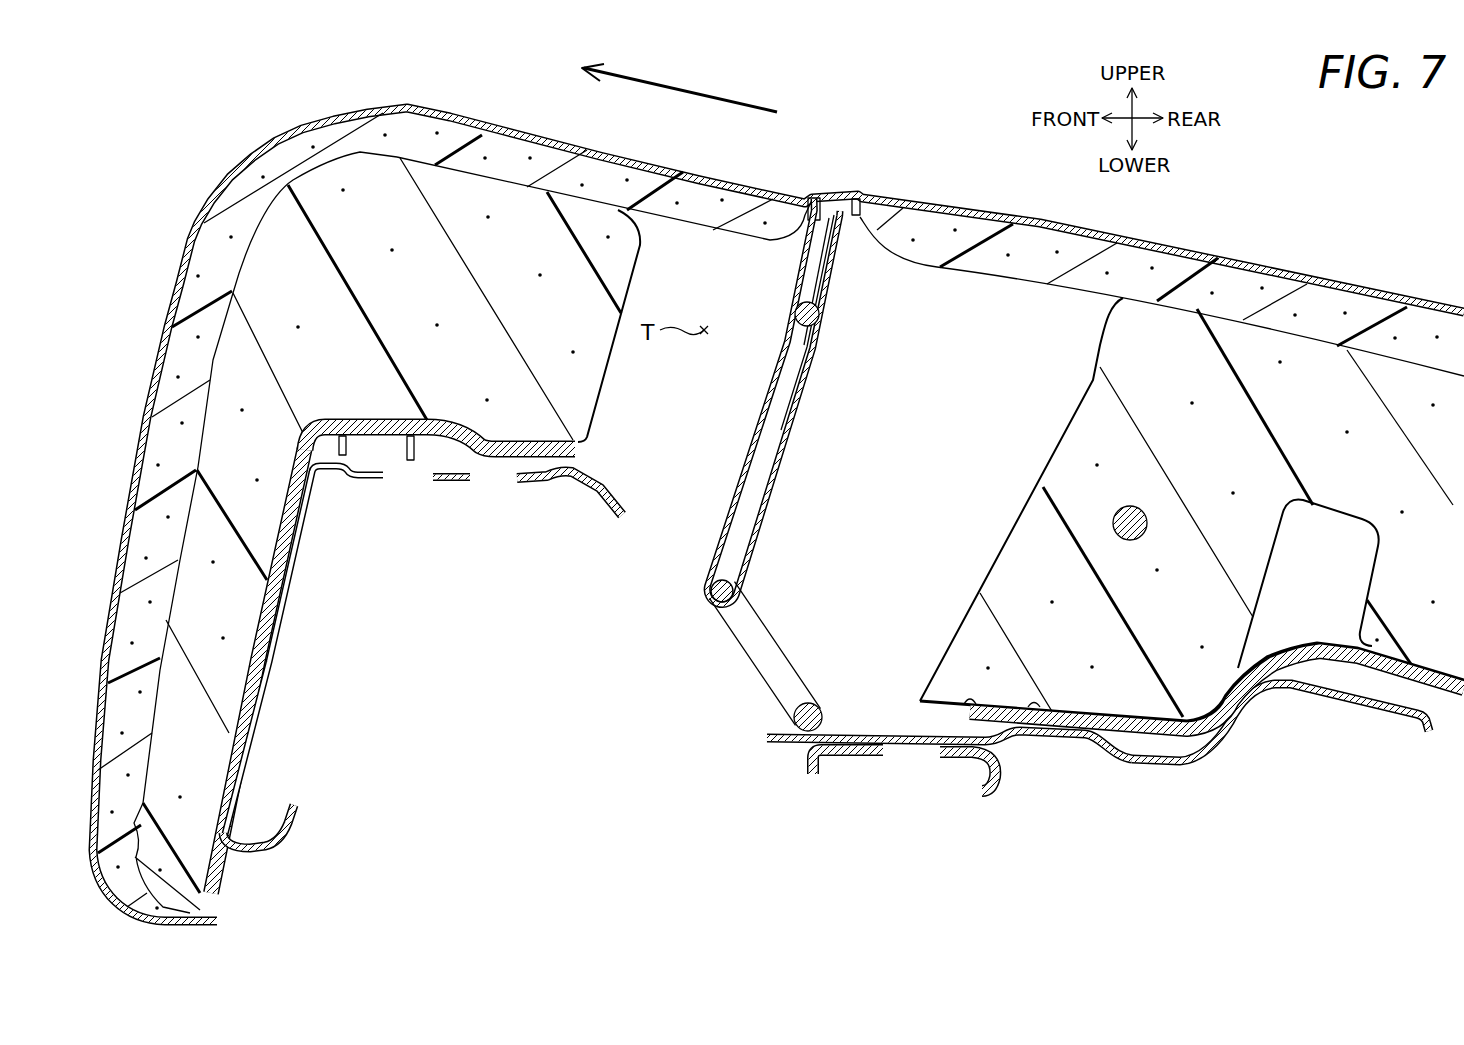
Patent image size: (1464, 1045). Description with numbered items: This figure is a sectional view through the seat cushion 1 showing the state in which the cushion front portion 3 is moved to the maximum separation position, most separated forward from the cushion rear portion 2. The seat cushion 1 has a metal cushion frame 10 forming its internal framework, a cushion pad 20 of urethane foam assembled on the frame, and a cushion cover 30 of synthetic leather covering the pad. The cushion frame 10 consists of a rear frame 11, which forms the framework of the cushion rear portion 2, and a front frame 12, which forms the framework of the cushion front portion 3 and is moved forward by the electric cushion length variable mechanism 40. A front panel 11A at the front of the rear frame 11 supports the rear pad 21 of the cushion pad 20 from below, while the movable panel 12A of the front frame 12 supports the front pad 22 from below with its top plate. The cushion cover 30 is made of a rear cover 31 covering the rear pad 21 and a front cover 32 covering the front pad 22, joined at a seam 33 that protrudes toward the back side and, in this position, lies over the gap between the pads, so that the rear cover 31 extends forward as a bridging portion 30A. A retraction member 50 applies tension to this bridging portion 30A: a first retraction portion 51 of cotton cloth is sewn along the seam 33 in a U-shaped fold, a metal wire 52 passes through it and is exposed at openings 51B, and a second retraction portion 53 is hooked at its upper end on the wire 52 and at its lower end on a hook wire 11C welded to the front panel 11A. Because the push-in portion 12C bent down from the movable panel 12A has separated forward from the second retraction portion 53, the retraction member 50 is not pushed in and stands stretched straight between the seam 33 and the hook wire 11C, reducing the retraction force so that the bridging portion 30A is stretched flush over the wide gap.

The seat cushion 1 is at (152, 124).
The cushion rear portion 2 is at (1370, 288).
The cushion front portion 3 is at (290, 128).
The cushion frame 10 is at (1313, 705).
The rear frame 11 is at (1205, 745).
The front panel 11A is at (1012, 745).
The hook wire 11C is at (755, 660).
The front frame 12 is at (290, 843).
The movable panel 12A is at (350, 480).
The push-in portion 12C is at (617, 520).
The cushion pad 20 is at (1403, 395).
The rear pad 21 is at (1310, 373).
The front pad 22 is at (365, 182).
The cushion cover 30 is at (1237, 280).
The bridging portion 30A is at (930, 203).
The rear cover 31 is at (1190, 241).
The front cover 32 is at (523, 124).
The seam 33 is at (813, 192).
The cushion length variable mechanism 40 is at (1095, 782).
The retraction member 50 is at (745, 412).
The first retraction portion 51 is at (838, 277).
The opening 51B is at (838, 301).
The wire 52 is at (822, 320).
The second retraction portion 53 is at (780, 477).